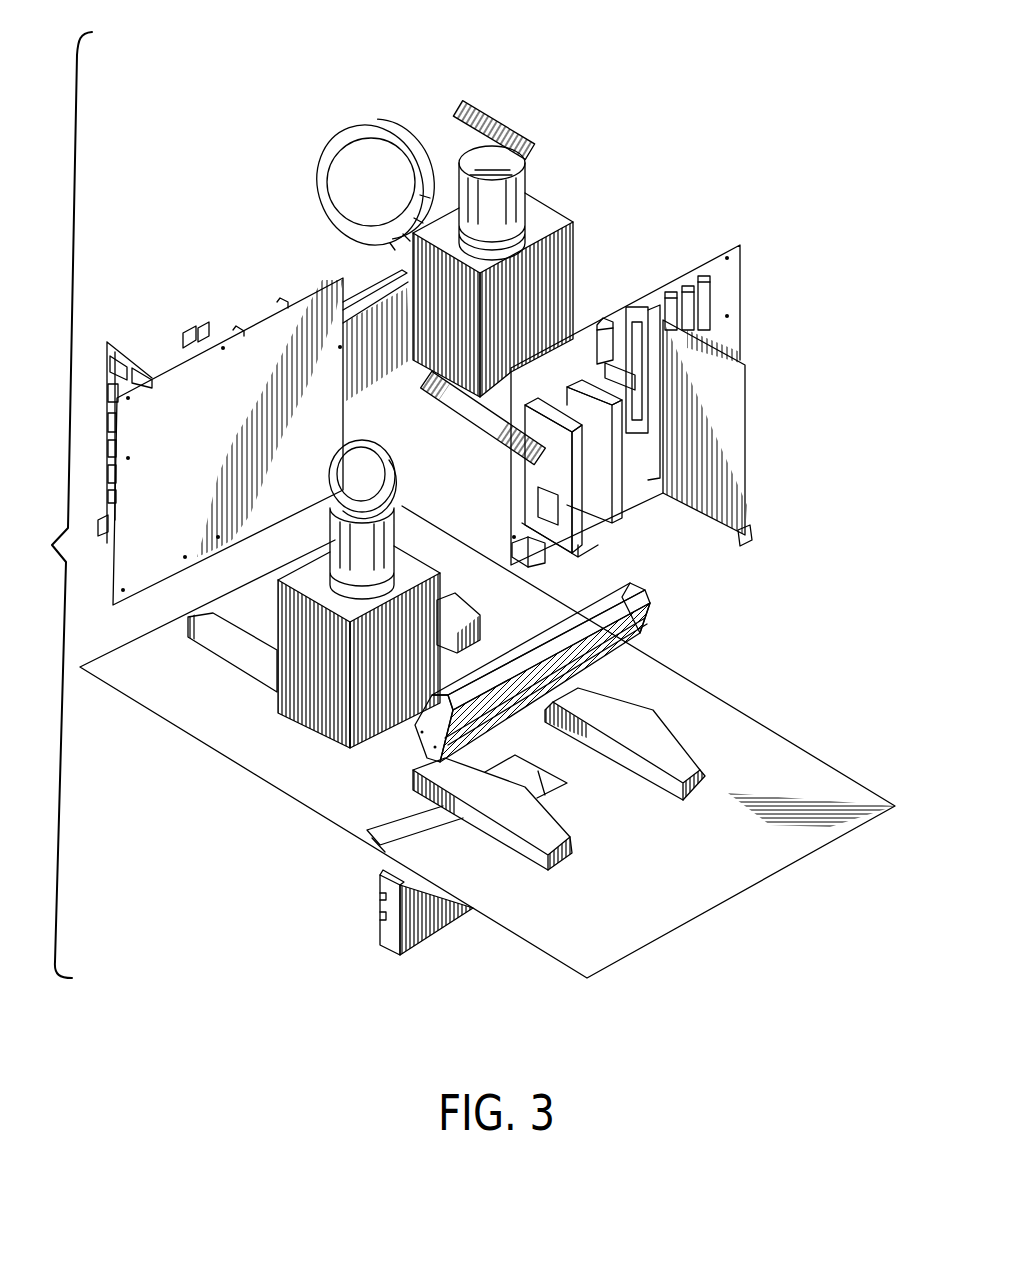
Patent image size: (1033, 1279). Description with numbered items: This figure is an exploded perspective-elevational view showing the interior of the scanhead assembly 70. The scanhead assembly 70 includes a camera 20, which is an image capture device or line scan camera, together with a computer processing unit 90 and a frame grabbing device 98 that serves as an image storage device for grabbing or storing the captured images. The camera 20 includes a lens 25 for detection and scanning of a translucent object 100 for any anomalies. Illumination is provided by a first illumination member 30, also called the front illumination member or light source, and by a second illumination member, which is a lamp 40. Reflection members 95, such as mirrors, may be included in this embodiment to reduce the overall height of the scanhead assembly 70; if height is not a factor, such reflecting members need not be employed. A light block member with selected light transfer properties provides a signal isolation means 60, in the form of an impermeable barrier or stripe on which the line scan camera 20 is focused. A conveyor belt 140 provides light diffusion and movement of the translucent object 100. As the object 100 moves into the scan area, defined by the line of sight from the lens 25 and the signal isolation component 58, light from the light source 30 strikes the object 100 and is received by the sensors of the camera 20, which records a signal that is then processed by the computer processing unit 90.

The camera 20 is at (553, 228).
The lens 25 is at (523, 165).
The first illumination member 30 is at (373, 290).
The lamp 40 is at (380, 945).
The signal isolation component 58 is at (390, 838).
The signal isolation means 60 is at (386, 843).
The scanhead assembly 70 is at (50, 505).
The computer processing unit 90 is at (276, 308).
The reflection members 95 is at (493, 128).
The frame grabbing device 98 is at (107, 342).
The translucent object 100 is at (630, 712).
The conveyor belt 140 is at (745, 727).